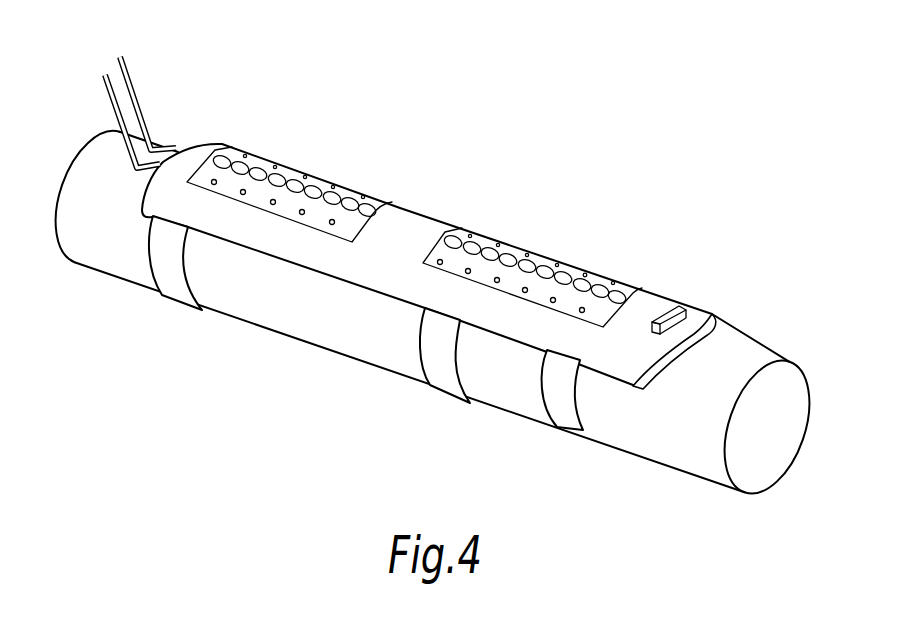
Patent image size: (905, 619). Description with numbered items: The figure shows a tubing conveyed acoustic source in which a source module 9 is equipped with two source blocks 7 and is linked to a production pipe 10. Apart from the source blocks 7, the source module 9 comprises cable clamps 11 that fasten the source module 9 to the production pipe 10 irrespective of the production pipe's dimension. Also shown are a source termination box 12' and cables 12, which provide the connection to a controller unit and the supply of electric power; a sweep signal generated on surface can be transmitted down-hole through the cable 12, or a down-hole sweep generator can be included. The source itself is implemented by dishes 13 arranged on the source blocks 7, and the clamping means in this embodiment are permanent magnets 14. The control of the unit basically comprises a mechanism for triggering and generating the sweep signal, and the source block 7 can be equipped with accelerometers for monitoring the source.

The source module 9 is at (210, 90).
The source block 7 is at (530, 200).
The production pipe 10 is at (731, 361).
The cable clamp 11 is at (562, 422).
The cable 12 is at (110, 112).
The source termination box 12' is at (678, 280).
The dish 13 is at (455, 238).
The permanent magnet 14 is at (586, 273).